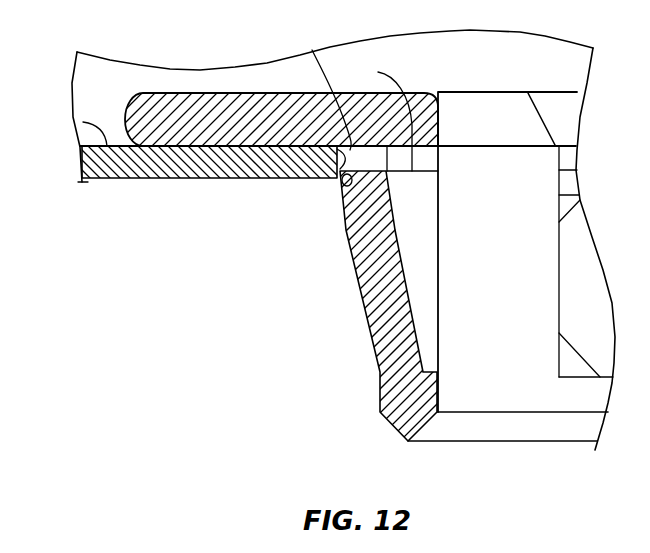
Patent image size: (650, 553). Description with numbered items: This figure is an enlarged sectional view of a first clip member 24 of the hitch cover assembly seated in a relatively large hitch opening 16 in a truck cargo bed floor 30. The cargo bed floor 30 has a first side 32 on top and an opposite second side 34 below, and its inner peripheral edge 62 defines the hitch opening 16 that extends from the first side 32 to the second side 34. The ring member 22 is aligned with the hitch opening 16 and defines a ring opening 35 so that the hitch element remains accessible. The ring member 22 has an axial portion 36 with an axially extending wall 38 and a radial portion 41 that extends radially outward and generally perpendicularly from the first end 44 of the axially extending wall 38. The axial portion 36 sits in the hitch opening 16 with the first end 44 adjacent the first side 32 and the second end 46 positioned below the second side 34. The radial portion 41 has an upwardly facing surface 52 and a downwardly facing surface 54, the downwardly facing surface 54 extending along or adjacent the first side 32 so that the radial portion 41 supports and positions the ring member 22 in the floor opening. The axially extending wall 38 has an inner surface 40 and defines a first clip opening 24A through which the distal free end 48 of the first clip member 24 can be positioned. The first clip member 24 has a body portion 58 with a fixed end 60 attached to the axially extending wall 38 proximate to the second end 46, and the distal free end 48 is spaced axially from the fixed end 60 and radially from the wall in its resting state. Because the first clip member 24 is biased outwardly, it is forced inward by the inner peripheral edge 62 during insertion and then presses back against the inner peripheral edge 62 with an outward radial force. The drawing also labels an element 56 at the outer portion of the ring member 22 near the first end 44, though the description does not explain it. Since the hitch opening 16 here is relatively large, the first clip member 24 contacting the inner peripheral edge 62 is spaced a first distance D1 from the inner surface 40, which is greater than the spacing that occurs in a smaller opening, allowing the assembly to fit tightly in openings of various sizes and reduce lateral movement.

The hitch opening 16 is at (324, 86).
The ring member 22 is at (197, 90).
The first clip member 24 is at (360, 280).
The first clip opening 24A is at (432, 323).
The cargo bed floor 30 is at (113, 180).
The first side 32 is at (83, 122).
The second side 34 is at (175, 180).
The ring opening 35 is at (500, 170).
The axial portion 36 is at (455, 160).
The axially extending wall 38 is at (438, 252).
The inner surface 40 is at (438, 288).
The radial portion 41 is at (263, 103).
The first end 44 is at (538, 88).
The second end 46 is at (497, 443).
The distal free end 48 is at (372, 200).
The upwardly facing surface 52 is at (208, 90).
The downwardly facing surface 54 is at (230, 150).
The outer housing 56 is at (553, 113).
The body portion 58 is at (377, 315).
The fixed end 60 is at (405, 440).
The inner peripheral edge 62 is at (340, 188).
The first distance D1 is at (392, 115).